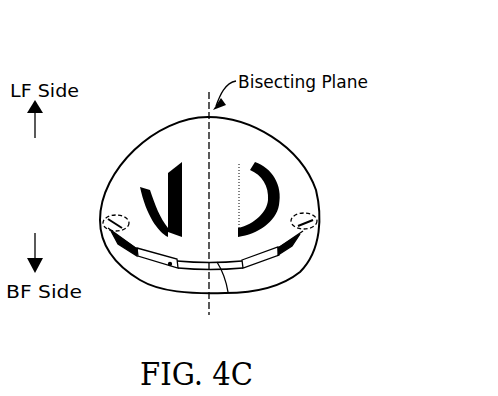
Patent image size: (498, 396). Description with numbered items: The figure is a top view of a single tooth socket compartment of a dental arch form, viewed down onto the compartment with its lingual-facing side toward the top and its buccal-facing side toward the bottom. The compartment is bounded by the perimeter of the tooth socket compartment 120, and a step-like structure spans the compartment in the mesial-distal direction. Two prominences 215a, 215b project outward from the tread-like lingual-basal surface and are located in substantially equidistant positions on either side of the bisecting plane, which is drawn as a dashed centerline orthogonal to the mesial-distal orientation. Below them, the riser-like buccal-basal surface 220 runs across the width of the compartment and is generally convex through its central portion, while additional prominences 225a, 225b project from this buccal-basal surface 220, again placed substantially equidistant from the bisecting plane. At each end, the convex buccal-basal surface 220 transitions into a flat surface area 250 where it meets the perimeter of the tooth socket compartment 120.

The perimeter of the tooth socket compartment 120 is at (290, 157).
The prominence 215a is at (258, 183).
The prominence 215b is at (162, 188).
The riser-like buccal-basal surface 220 is at (233, 293).
The prominence 225a is at (265, 262).
The prominence 225b is at (158, 266).
The flat surface area 250 is at (116, 215).